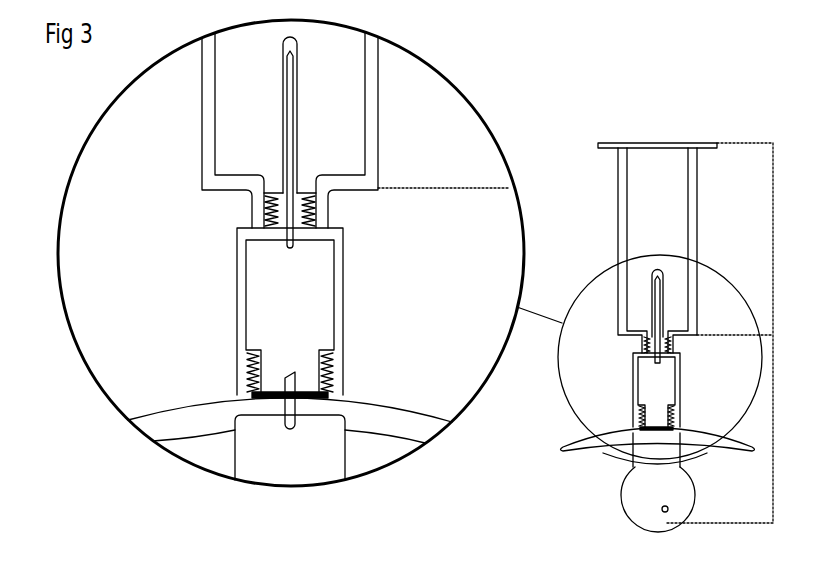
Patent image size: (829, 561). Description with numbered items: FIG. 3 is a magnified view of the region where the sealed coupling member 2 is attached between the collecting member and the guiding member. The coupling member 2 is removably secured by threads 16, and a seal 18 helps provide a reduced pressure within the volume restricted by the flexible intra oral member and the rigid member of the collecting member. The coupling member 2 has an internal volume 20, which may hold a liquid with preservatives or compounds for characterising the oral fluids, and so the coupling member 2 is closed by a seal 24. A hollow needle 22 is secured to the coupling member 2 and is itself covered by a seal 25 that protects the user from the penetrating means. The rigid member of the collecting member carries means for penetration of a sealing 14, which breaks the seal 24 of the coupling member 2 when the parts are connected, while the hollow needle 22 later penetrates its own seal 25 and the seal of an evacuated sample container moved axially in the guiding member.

The sealed coupling member 2 is at (318, 311).
The means for penetration of a sealing 14 is at (299, 368).
The threads 16 is at (239, 375).
The seal 18 is at (344, 373).
The chamber 20 is at (312, 312).
The hollow needle 22 is at (299, 149).
The seal of the coupling member 24 is at (304, 399).
The seal of the needle 25 is at (297, 51).